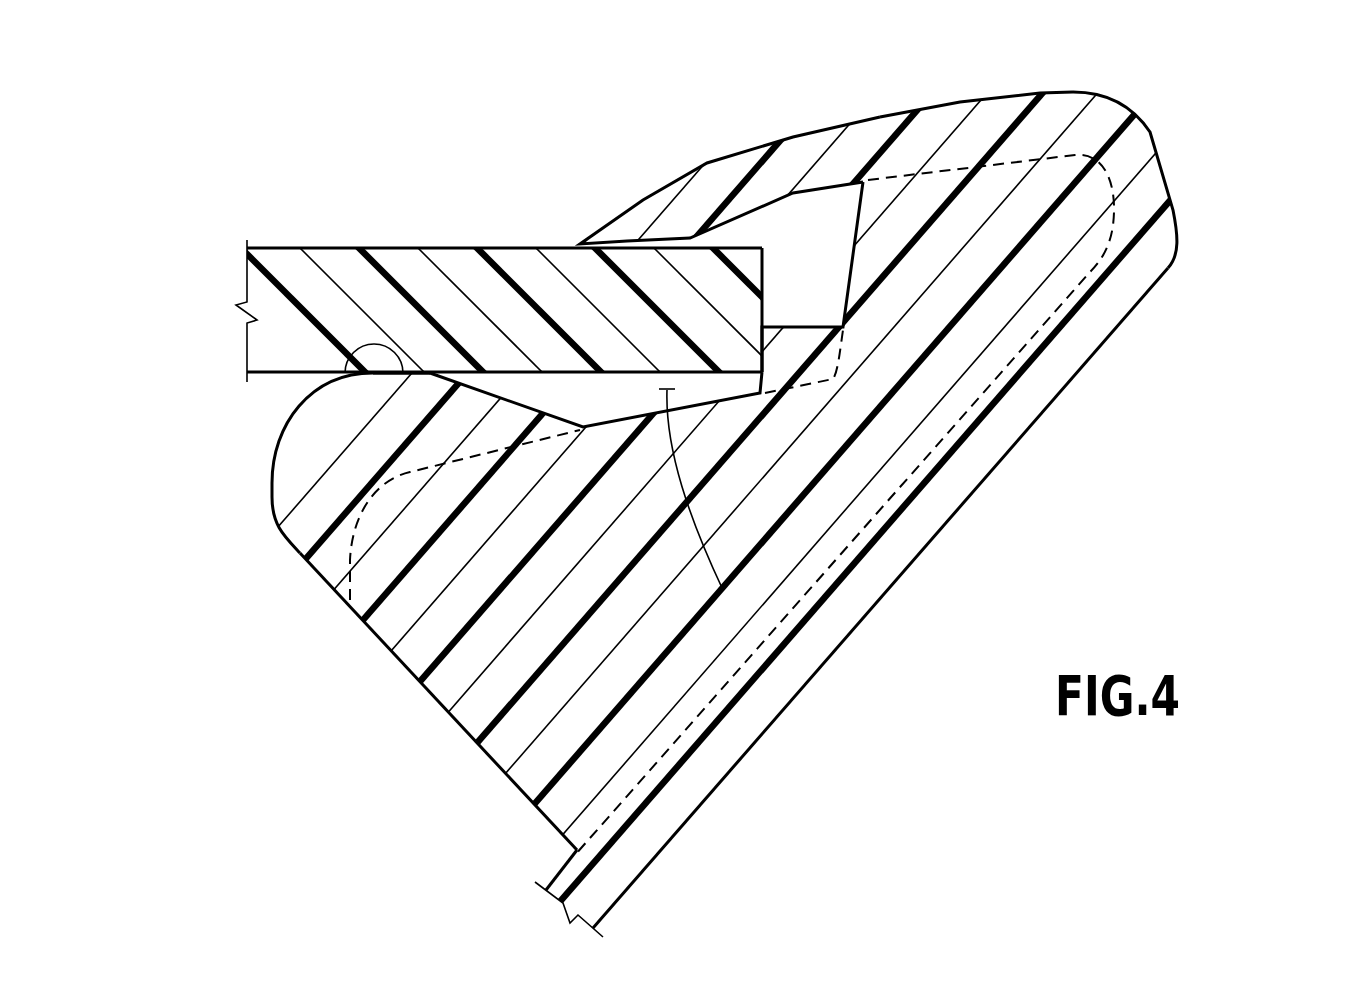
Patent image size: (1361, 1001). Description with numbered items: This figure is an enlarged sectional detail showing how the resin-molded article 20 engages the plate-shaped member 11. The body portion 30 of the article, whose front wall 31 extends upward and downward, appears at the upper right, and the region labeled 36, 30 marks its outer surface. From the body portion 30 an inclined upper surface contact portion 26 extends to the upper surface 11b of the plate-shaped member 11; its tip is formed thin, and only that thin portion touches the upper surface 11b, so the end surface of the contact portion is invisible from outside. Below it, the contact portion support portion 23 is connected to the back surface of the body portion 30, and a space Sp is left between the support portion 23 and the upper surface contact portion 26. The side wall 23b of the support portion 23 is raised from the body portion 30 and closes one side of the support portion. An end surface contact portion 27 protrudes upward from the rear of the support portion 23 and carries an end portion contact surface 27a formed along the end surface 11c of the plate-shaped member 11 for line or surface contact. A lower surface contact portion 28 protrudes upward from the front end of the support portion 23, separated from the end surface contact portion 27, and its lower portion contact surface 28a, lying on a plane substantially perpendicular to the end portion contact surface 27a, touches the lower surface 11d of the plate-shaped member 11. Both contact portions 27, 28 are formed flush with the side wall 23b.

The plate-shaped member 11 is at (243, 268).
The upper surface 11b is at (405, 247).
The end surface 11c is at (767, 313).
The lower surface 11d is at (268, 373).
The resin-molded article 20 is at (1258, 112).
The contact portion support portion 23 is at (672, 500).
The side wall 23b is at (437, 703).
The upper surface contact portion 26 is at (650, 198).
The end surface contact portion 27 is at (812, 327).
The end portion contact surface 27a is at (748, 373).
The lower surface contact portion 28 is at (270, 500).
The lower portion contact surface 28a is at (330, 373).
The body portion 30 is at (1125, 180).
The front wall 31 is at (1080, 370).
The upper surface of top wall 36 is at (962, 103).
The space Sp is at (723, 590).